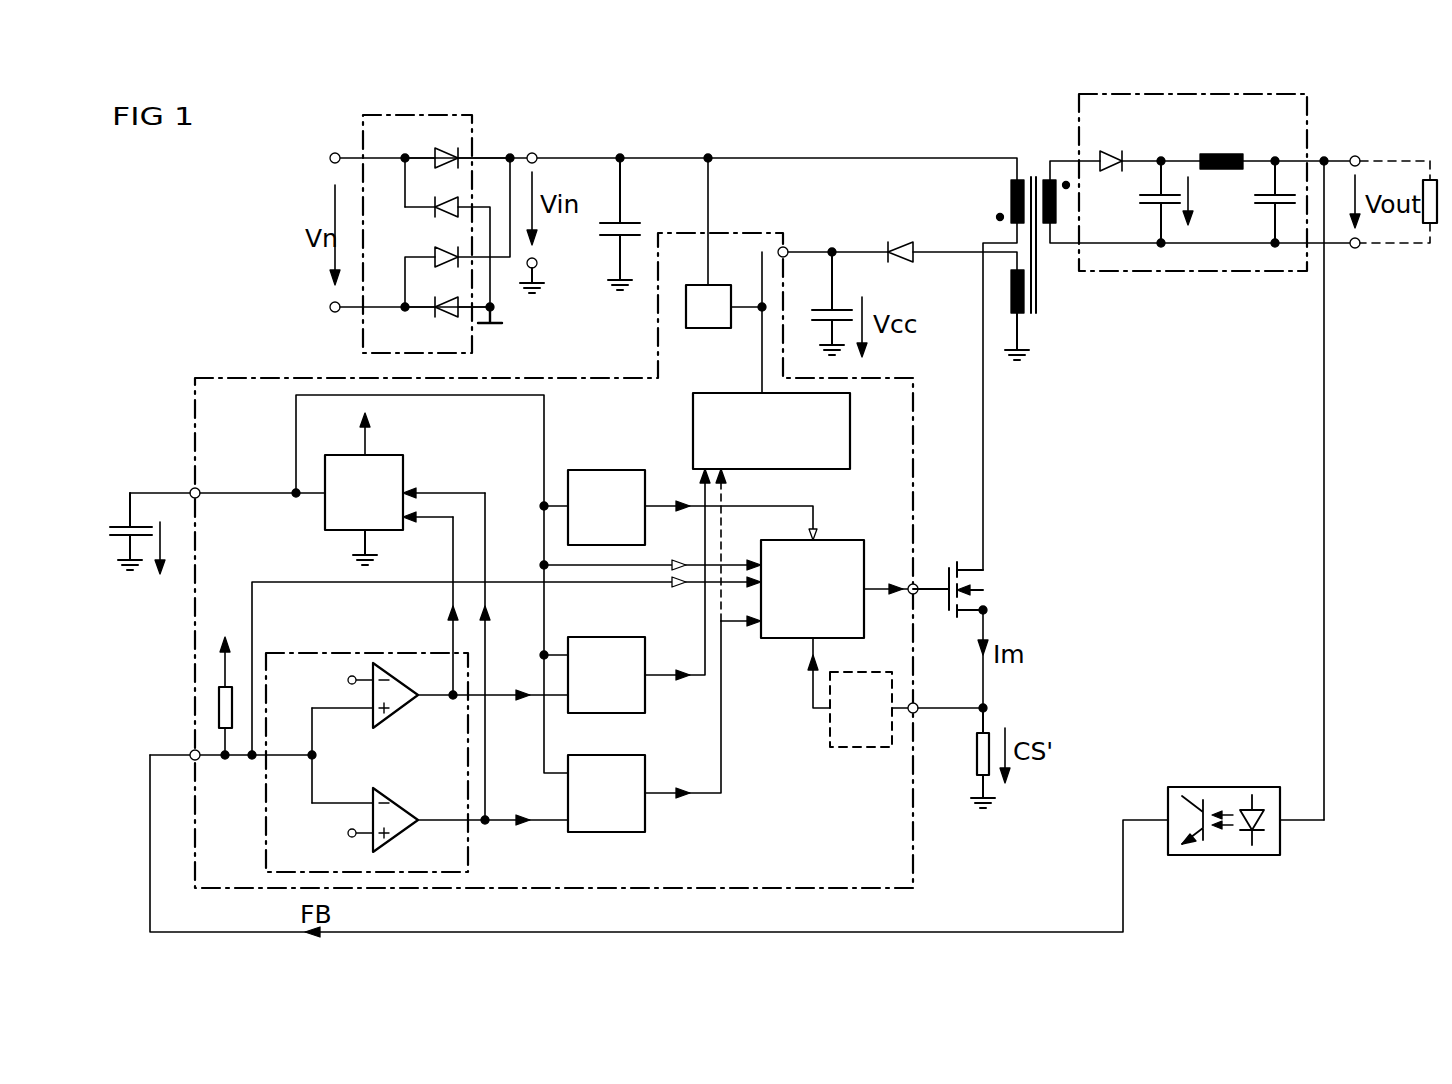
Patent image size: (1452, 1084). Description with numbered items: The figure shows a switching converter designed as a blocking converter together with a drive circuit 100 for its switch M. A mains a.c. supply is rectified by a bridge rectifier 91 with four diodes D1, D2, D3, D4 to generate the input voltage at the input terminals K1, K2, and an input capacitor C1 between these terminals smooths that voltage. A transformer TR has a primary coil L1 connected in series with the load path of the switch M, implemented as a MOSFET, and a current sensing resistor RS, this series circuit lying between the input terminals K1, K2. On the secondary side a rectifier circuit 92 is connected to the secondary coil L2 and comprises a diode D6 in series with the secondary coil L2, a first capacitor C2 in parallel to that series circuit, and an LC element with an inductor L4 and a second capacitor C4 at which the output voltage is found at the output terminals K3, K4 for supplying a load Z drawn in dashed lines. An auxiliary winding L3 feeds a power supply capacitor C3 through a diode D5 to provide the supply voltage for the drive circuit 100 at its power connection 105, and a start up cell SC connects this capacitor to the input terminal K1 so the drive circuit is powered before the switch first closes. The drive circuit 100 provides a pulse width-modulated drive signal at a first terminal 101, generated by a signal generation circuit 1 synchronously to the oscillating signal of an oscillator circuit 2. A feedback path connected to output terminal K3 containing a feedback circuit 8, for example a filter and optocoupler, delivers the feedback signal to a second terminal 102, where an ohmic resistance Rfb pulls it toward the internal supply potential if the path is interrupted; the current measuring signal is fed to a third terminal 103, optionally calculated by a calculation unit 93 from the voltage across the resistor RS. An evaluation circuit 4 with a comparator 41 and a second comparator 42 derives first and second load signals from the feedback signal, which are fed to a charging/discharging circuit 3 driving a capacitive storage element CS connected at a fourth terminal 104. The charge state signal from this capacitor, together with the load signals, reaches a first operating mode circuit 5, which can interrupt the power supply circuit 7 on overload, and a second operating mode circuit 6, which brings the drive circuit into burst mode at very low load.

The signal generation circuit 1 is at (843, 540).
The oscillator circuit 2 is at (607, 470).
The charging/discharging circuit 3 is at (404, 469).
The evaluation circuit 4 is at (347, 653).
The first operating mode circuit 5 is at (607, 637).
The second operating mode circuit 6 is at (641, 755).
The power supply circuit 7 is at (850, 433).
The feedback circuit 8 is at (1223, 787).
The comparator 41 is at (396, 712).
The comparator 42 is at (396, 796).
The bridge rectifier 91 is at (406, 234).
The rectifier circuit 92 is at (1201, 215).
The calculation unit 93 is at (846, 748).
The drive circuit 100 is at (291, 378).
The first terminal 101 is at (916, 584).
The second terminal 102 is at (198, 760).
The third terminal 103 is at (916, 704).
The fourth terminal 104 is at (190, 491).
The power connection for the drive circuit 105 is at (788, 249).
The diode D1 is at (436, 152).
The diode D2 is at (434, 212).
The diode D3 is at (434, 253).
The diode D4 is at (446, 312).
The diode D5 is at (896, 245).
The diode D6 is at (1106, 157).
The input capacitor C1 is at (626, 222).
The first capacitor C2 is at (1140, 199).
The power supply capacitor C3 is at (840, 310).
The second capacitor C4 is at (1258, 199).
The primary coil L1 is at (1011, 210).
The secondary coil L2 is at (1050, 172).
The auxiliary winding L3 is at (1025, 316).
The inductor L4 is at (1218, 154).
The transformer TR is at (1156, 330).
The switch M is at (976, 578).
The current sensing resistor RS is at (978, 776).
The ohmic resistance Rfb is at (218, 700).
The start up cell SC is at (706, 329).
The capacitive storage element CS is at (128, 524).
The load Z is at (1432, 180).
The input terminal K1 is at (534, 153).
The input terminal K2 is at (538, 266).
The output terminal K3 is at (1356, 155).
The output terminal K4 is at (1356, 249).